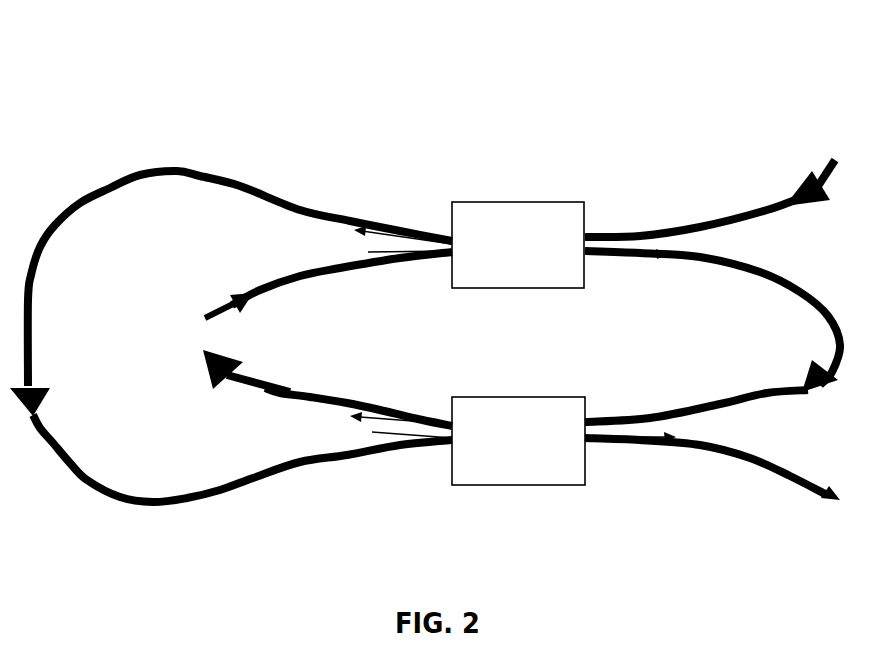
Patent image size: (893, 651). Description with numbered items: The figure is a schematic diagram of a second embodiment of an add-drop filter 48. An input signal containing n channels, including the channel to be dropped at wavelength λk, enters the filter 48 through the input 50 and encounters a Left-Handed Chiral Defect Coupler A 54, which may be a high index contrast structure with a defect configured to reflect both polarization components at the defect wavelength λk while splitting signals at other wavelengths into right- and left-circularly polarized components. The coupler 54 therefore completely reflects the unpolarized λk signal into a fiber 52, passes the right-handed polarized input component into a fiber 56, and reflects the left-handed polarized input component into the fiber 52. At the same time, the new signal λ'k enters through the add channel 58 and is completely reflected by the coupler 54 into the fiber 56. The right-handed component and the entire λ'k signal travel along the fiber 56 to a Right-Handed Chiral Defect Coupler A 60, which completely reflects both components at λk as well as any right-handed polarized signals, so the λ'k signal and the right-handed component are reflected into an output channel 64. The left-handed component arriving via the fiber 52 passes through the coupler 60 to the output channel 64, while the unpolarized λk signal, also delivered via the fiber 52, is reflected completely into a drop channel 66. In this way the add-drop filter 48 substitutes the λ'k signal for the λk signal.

The add-drop filter 48 is at (519, 65).
The input 50 is at (698, 227).
The fiber 52 is at (767, 272).
The Left-Handed Chiral Defect Coupler A 54 is at (513, 201).
The fiber 56 is at (180, 168).
The add channel 58 is at (303, 290).
The Right-Handed Chiral Defect Coupler A 60 is at (505, 395).
The output channel 64 is at (290, 393).
The drop channel 66 is at (761, 457).